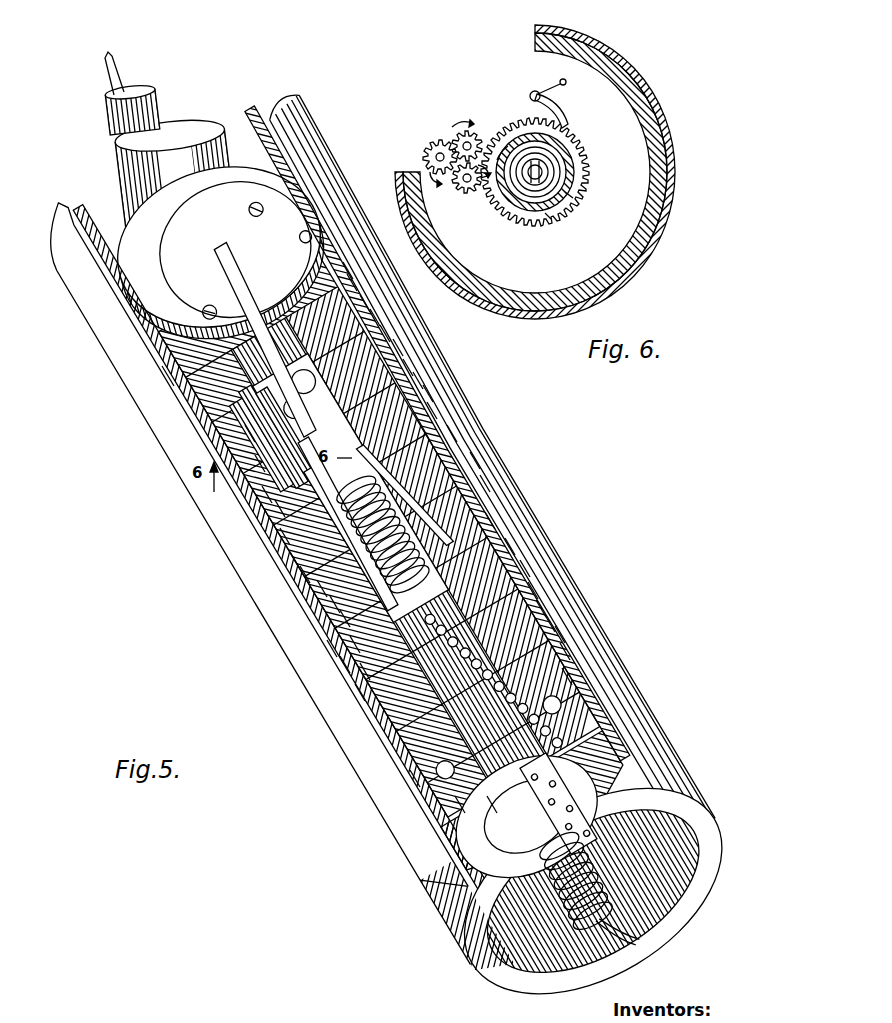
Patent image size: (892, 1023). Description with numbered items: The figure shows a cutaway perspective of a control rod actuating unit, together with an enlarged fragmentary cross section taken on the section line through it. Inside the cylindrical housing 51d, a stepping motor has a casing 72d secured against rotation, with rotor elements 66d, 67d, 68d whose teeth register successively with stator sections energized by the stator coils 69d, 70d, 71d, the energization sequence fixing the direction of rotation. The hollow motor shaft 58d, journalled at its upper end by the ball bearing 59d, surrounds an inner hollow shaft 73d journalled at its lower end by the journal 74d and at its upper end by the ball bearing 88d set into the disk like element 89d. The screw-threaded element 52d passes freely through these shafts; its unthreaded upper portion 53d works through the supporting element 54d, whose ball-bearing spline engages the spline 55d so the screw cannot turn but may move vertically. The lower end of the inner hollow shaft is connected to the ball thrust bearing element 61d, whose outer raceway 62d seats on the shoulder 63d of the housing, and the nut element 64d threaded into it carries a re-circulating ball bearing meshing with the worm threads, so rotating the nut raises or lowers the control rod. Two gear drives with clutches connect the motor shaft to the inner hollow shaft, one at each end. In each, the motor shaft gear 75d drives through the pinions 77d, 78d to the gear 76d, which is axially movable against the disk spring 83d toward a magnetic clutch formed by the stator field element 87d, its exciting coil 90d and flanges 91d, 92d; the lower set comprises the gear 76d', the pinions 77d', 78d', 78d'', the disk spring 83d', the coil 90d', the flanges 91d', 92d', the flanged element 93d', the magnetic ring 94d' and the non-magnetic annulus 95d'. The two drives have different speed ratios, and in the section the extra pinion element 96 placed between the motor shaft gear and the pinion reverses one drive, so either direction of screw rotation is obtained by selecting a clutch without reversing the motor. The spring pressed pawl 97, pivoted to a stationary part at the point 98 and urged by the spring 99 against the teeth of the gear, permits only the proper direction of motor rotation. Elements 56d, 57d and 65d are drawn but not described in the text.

In FIG. 5, the cylindrical housing 51d is at (295, 163).
In FIG. 5, the screw-threaded element 52d is at (585, 895).
In FIG. 6, the screw-threaded element 52d is at (565, 160).
In FIG. 5, the upper unthreaded portion of worm screw rod 53d is at (162, 366).
In FIG. 5, the supporting element 54d is at (122, 290).
In FIG. 5, the spline 55d is at (215, 320).
In FIG. 5, the barrel 56d is at (603, 698).
In FIG. 5, the shaft 57d is at (480, 475).
In FIG. 5, the motor shaft 58d is at (470, 452).
In FIG. 6, the motor shaft 58d is at (575, 198).
In FIG. 5, the ball bearing 59d is at (427, 402).
In FIG. 5, the ball thrust type bearing element 61d is at (467, 816).
In FIG. 5, the outer raceway 62d is at (410, 770).
In FIG. 5, the shoulder 63d is at (455, 796).
In FIG. 5, the nut element 64d is at (487, 796).
In FIG. 5, the plate 65d is at (565, 775).
In FIG. 5, the rotor element 66d is at (280, 528).
In FIG. 5, the rotor element 67d is at (317, 580).
In FIG. 5, the rotor element 68d is at (330, 596).
In FIG. 5, the stator coil 69d is at (275, 500).
In FIG. 5, the stator coil 70d is at (290, 552).
In FIG. 5, the stator coil 71d is at (340, 610).
In FIG. 5, the motor casing 72d is at (300, 566).
In FIG. 5, the inner hollow shaft 73d is at (485, 512).
In FIG. 6, the inner hollow shaft 73d is at (575, 172).
In FIG. 5, the journal 74d is at (562, 668).
In FIG. 5, the motor shaft gear 75d is at (423, 385).
In FIG. 6, the motor shaft gear 75d is at (550, 222).
In FIG. 5, the gear 76d is at (185, 439).
In FIG. 5, the gear 76d' is at (420, 608).
In FIG. 5, the pinion 77d is at (195, 466).
In FIG. 6, the pinion 77d is at (430, 143).
In FIG. 5, the pinion 77d' is at (280, 668).
In FIG. 5, the pinion 78d is at (312, 420).
In FIG. 6, the pinion 78d is at (456, 190).
In FIG. 5, the pinion 78d' is at (261, 654).
In FIG. 5, the pinion 78d'' is at (315, 674).
In FIG. 5, the disk spring 83d is at (444, 368).
In FIG. 5, the disk spring 83d' is at (303, 649).
In FIG. 5, the stator field element 87d is at (360, 295).
In FIG. 5, the ball bearing 88d is at (343, 262).
In FIG. 5, the disk like element 89d is at (347, 274).
In FIG. 5, the exciting coil 90d is at (404, 307).
In FIG. 5, the exciting coil 90d' is at (585, 612).
In FIG. 5, the field element flange 91d is at (417, 322).
In FIG. 5, the field element flange 91d' is at (560, 557).
In FIG. 5, the smaller radius flange 92d is at (436, 334).
In FIG. 5, the smaller radius flange 92d' is at (599, 641).
In FIG. 5, the flanged element 93d' is at (608, 624).
In FIG. 5, the magnetic material ring 94d' is at (567, 578).
In FIG. 5, the non-magnetic annulus 95d' is at (575, 597).
In FIG. 6, the extra pinion element 96 is at (480, 140).
In FIG. 6, the spring pressed pawl 97 is at (568, 121).
In FIG. 6, the pivot point 98 is at (531, 93).
In FIG. 6, the spring 99 is at (558, 83).